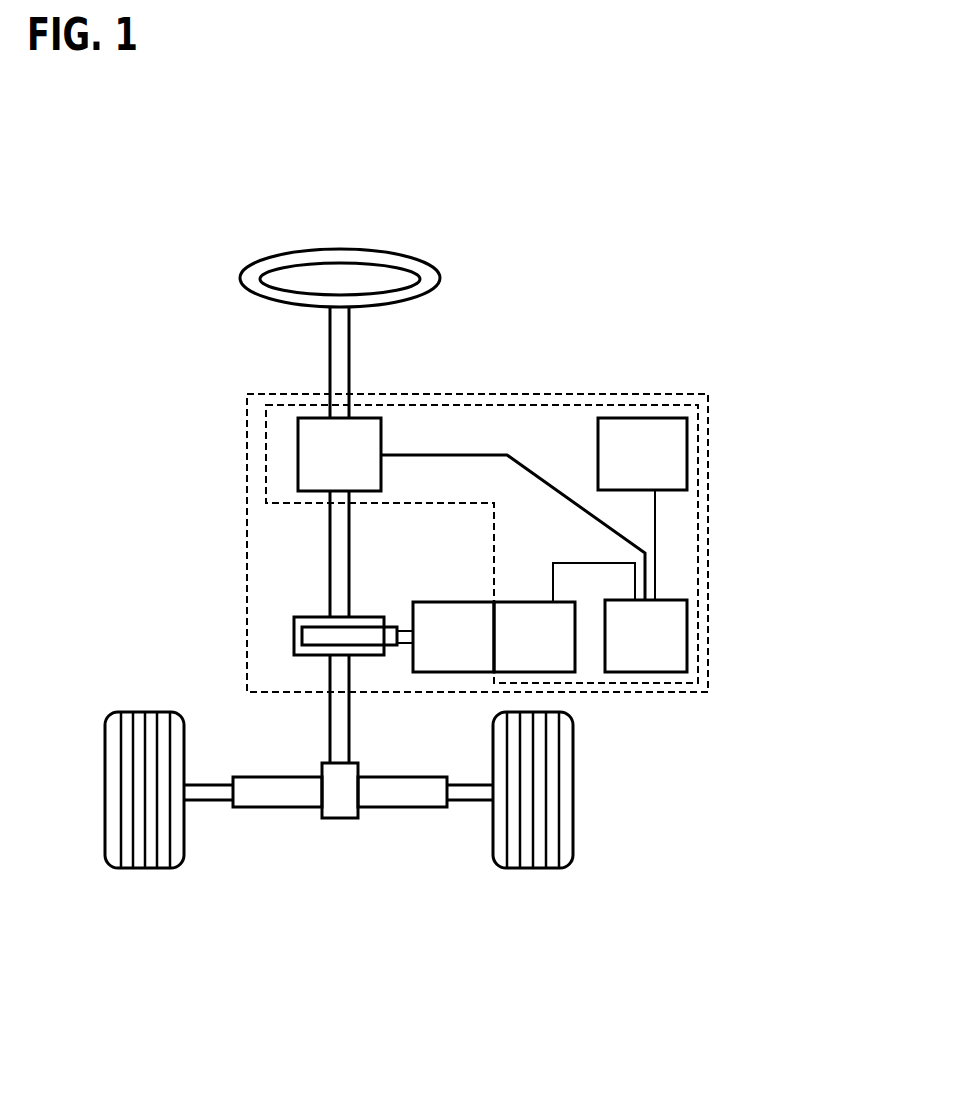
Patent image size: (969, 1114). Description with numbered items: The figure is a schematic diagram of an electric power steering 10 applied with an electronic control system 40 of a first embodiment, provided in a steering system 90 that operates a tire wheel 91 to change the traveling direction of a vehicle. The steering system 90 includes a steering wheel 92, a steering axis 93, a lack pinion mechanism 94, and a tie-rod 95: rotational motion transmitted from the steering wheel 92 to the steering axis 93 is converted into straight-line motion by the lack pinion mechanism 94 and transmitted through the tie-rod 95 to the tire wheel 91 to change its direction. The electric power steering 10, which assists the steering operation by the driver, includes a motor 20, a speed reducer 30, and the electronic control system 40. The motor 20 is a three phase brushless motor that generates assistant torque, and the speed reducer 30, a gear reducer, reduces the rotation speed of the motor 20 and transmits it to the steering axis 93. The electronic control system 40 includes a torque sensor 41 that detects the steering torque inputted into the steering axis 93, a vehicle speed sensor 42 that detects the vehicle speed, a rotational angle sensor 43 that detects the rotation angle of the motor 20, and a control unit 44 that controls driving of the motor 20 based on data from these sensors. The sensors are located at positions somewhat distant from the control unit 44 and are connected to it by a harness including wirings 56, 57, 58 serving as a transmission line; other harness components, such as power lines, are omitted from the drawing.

The electric power steering 10 is at (655, 394).
The electronic control system 40 is at (604, 405).
The steering wheel 92 is at (240, 280).
The steering axis 93 is at (330, 347).
The torque sensor 41 is at (298, 458).
The vehicle speed sensor 42 is at (687, 455).
The wiring 56 is at (458, 455).
The wiring 57 is at (655, 533).
The wiring 58 is at (573, 563).
The control unit 44 is at (687, 637).
The speed reducer 30 is at (294, 637).
The motor 20 is at (455, 672).
The rotational angle sensor 43 is at (567, 672).
The lack pinion mechanism 94 is at (342, 818).
The tie-rod 95 is at (209, 800).
The tire wheel 91 is at (160, 868).
The steering system 90 is at (301, 920).